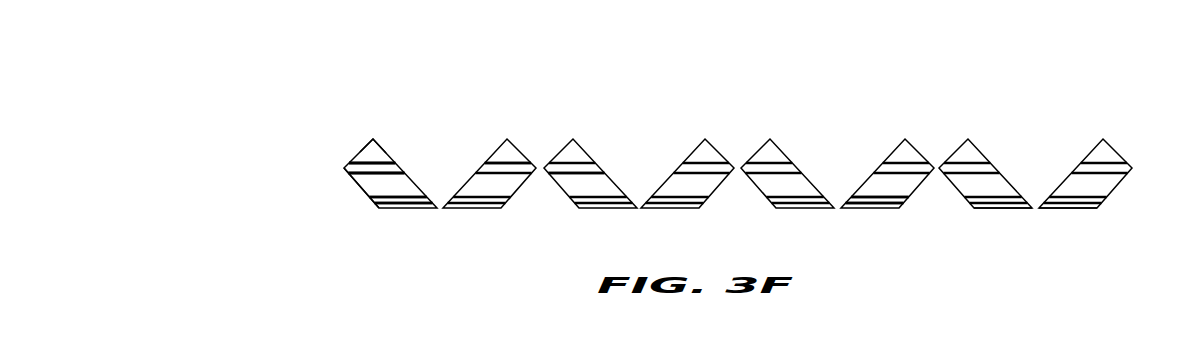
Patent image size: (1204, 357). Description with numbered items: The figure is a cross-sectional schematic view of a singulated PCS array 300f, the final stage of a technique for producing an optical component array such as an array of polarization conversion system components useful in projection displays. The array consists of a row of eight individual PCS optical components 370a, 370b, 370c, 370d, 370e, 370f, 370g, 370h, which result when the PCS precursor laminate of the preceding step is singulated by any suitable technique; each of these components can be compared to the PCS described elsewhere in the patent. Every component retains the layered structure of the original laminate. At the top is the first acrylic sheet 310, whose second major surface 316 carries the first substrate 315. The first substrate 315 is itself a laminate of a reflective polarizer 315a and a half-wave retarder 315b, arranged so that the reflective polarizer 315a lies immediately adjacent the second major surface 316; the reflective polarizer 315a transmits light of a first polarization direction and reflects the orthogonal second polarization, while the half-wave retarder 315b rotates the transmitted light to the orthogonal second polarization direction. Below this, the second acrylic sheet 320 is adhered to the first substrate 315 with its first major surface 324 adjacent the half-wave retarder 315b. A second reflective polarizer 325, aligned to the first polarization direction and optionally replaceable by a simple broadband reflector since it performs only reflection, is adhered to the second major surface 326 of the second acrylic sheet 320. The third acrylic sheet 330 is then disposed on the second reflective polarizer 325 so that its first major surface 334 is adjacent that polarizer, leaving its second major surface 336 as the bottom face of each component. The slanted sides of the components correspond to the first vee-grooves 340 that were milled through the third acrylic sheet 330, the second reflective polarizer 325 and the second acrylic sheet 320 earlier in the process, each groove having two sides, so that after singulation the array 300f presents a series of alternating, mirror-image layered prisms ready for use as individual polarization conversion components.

The singulated PCS array 300f is at (276, 52).
The first acrylic sheet 310 is at (372, 140).
The first substrate 315 is at (345, 170).
The reflective polarizer 315a is at (316, 144).
The half-wave retarder 315b is at (321, 159).
The second major surface 316 is at (503, 162).
The second acrylic sheet 320 is at (363, 185).
The first major surface 324 is at (593, 172).
The second reflective polarizer 325 is at (375, 201).
The second major surface 326 is at (870, 196).
The third acrylic sheet 330 is at (378, 207).
The first major surface 334 is at (1002, 203).
The second major surface 336 is at (1068, 208).
The first vee-grooves 340 is at (533, 209).
The individual PCS optical component 370a is at (377, 116).
The individual PCS optical component 370b is at (504, 115).
The individual PCS optical component 370c is at (576, 116).
The individual PCS optical component 370d is at (705, 115).
The individual PCS optical component 370e is at (777, 116).
The individual PCS optical component 370f is at (907, 115).
The individual PCS optical component 370g is at (979, 116).
The individual PCS optical component 370h is at (1112, 116).